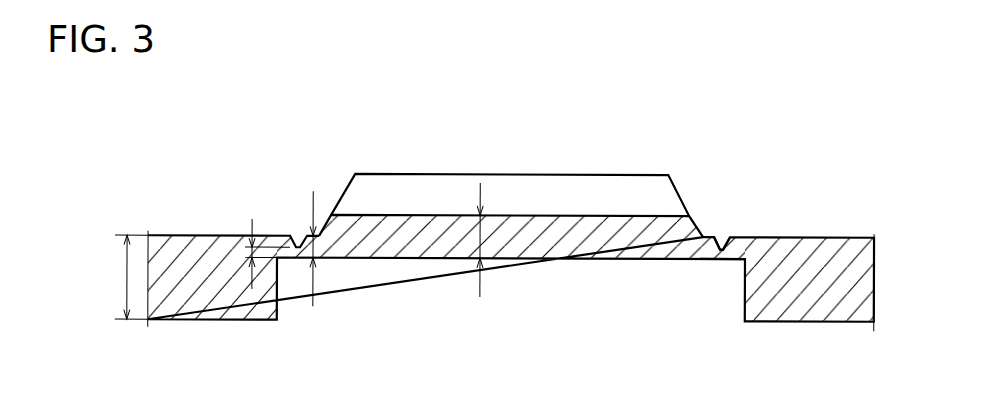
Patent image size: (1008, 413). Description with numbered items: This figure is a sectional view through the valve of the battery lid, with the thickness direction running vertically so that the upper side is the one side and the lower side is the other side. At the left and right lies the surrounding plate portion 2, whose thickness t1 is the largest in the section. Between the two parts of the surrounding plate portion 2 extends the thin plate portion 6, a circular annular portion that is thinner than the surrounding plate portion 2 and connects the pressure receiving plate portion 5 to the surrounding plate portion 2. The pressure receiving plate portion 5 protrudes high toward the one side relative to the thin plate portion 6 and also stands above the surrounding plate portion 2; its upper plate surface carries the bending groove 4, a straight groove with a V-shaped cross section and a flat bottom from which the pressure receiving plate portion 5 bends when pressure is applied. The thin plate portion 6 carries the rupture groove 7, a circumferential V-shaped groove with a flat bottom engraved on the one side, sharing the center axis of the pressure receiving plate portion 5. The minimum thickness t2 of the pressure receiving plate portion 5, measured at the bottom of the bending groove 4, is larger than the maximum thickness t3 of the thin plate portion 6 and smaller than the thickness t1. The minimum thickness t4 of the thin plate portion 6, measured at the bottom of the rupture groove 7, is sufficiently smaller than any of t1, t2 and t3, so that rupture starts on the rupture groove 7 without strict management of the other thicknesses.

The surrounding plate portion 2 is at (812, 252).
The bending groove 4 is at (578, 215).
The pressure receiving plate portion 5 is at (670, 177).
The thin plate portion 6 is at (710, 249).
The rupture groove 7 is at (727, 238).
The thickness of the surrounding plate portion t1 is at (125, 287).
The minimum thickness of the pressure receiving plate portion t2 is at (480, 242).
The maximum thickness of the thin plate portion t3 is at (313, 246).
The minimum thickness of the thin plate portion t4 is at (252, 243).